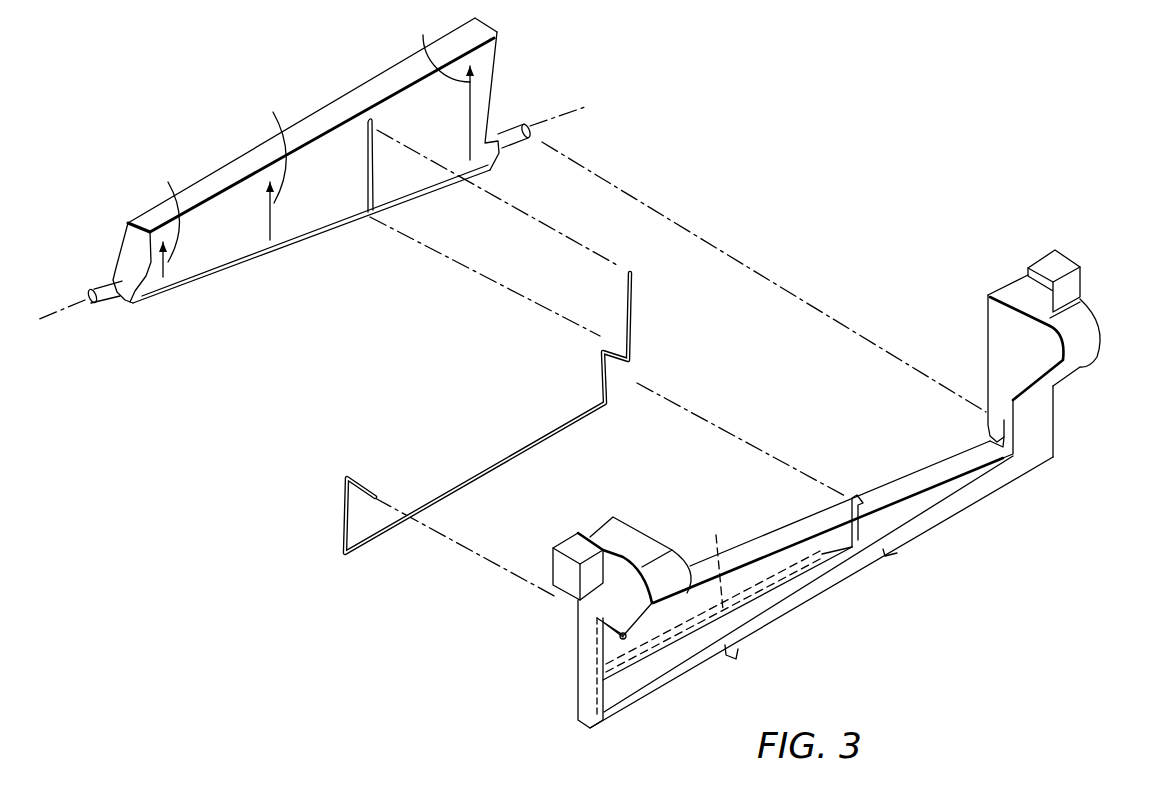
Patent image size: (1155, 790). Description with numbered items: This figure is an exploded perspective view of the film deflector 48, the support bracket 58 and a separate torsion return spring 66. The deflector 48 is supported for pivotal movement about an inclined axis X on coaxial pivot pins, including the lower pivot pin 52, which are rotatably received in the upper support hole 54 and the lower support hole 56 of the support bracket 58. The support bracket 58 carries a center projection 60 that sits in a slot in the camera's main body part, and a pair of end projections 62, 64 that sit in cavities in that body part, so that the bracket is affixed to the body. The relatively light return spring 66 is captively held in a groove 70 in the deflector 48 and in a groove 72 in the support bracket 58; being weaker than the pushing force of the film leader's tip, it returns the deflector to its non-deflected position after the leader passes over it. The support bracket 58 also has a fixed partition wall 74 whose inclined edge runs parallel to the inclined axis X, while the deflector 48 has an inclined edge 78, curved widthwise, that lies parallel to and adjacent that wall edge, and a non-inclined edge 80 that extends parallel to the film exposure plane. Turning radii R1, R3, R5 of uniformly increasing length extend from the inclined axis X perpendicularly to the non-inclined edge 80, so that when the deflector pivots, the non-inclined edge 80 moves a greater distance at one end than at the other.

The deflector 48 is at (234, 230).
The lower pivot pin 52 is at (517, 128).
The upper support hole 54 is at (588, 602).
The lower support hole 56 is at (987, 423).
The support bracket 58 is at (934, 528).
The center projection 60 is at (792, 617).
The end projection 62 is at (556, 556).
The end projection 64 is at (1062, 262).
The torsion return spring 66 is at (532, 438).
The groove 70 is at (371, 160).
The groove 72 is at (714, 556).
The partition wall 74 is at (691, 622).
The inclined edge 78 is at (320, 237).
The non-inclined edge 80 is at (338, 108).
The turning radius R1 is at (168, 209).
The turning radius R3 is at (270, 161).
The turning radius R5 is at (429, 80).
The inclined axis X is at (582, 105).